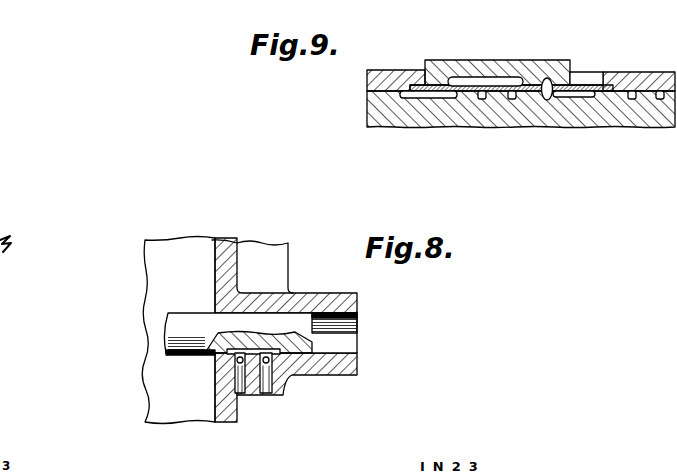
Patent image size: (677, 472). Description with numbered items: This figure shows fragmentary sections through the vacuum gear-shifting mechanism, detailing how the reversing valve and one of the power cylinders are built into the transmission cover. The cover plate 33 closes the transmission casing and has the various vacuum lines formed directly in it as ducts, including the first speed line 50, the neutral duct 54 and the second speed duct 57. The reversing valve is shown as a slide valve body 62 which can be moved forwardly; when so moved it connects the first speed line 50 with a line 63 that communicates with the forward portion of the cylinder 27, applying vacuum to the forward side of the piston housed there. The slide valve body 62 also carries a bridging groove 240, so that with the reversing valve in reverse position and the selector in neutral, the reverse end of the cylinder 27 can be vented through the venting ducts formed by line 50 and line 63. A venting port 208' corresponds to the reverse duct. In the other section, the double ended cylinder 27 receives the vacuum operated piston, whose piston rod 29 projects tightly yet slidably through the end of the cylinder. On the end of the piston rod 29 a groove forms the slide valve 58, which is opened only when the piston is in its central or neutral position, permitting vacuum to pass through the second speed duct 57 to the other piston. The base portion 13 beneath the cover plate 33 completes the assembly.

In FIG. 9, the base block 13 is at (450, 120).
In FIG. 9, the plate 33 is at (383, 78).
In FIG. 9, the slide valve body 62 is at (526, 66).
In FIG. 9, the bridging groove 240 is at (466, 82).
In FIG. 9, the first speed line 50 is at (483, 98).
In FIG. 9, the neutral duct 54 is at (513, 96).
In FIG. 9, the venting port 208' is at (534, 115).
In FIG. 9, the line 63 is at (578, 97).
In FIG. 9, the second speed duct 57 is at (661, 99).
In FIG. 8, the second speed duct 57 is at (265, 365).
In FIG. 8, the double ended cylinder 27 is at (162, 390).
In FIG. 8, the piston rod 29 is at (179, 320).
In FIG. 8, the slide valve 58 is at (281, 351).